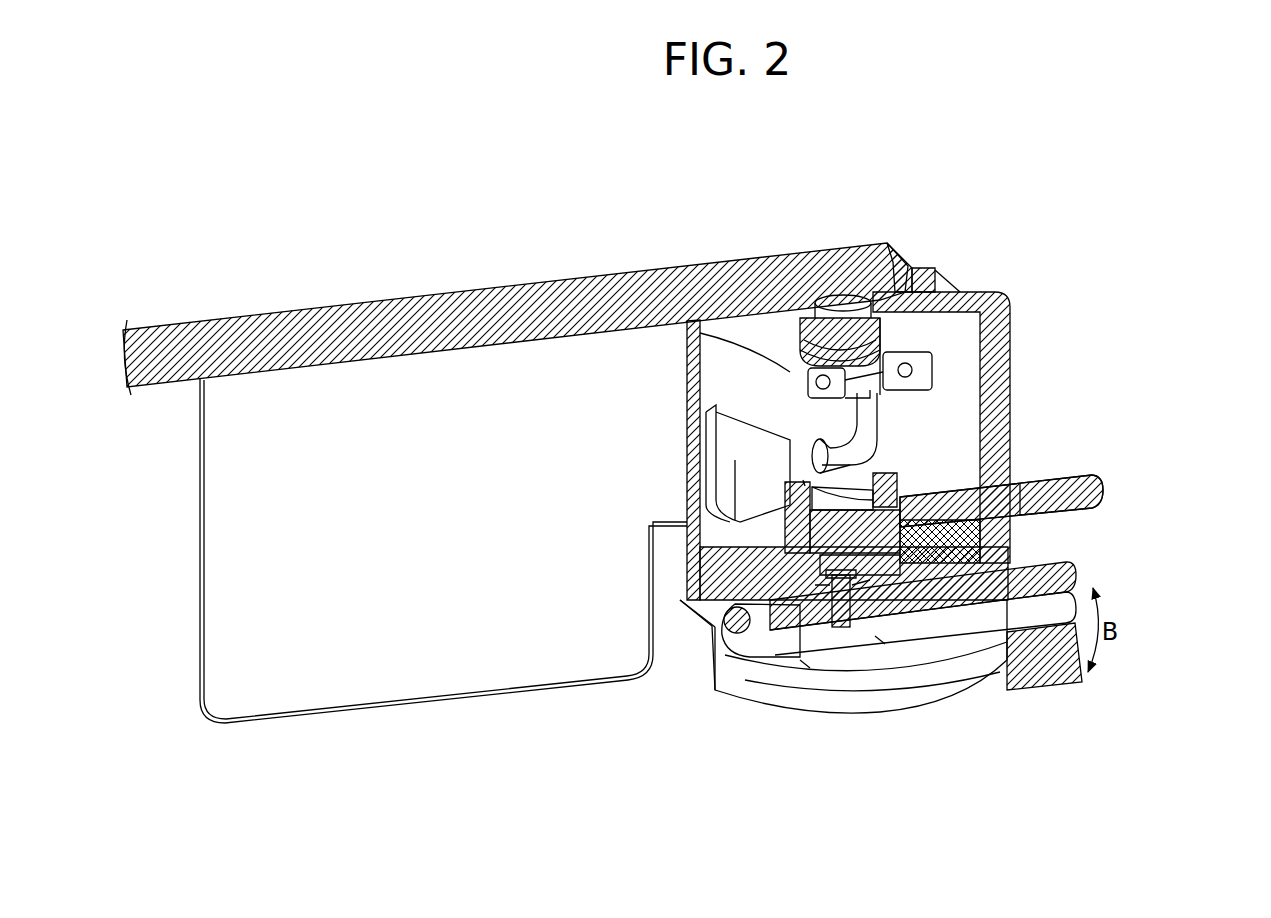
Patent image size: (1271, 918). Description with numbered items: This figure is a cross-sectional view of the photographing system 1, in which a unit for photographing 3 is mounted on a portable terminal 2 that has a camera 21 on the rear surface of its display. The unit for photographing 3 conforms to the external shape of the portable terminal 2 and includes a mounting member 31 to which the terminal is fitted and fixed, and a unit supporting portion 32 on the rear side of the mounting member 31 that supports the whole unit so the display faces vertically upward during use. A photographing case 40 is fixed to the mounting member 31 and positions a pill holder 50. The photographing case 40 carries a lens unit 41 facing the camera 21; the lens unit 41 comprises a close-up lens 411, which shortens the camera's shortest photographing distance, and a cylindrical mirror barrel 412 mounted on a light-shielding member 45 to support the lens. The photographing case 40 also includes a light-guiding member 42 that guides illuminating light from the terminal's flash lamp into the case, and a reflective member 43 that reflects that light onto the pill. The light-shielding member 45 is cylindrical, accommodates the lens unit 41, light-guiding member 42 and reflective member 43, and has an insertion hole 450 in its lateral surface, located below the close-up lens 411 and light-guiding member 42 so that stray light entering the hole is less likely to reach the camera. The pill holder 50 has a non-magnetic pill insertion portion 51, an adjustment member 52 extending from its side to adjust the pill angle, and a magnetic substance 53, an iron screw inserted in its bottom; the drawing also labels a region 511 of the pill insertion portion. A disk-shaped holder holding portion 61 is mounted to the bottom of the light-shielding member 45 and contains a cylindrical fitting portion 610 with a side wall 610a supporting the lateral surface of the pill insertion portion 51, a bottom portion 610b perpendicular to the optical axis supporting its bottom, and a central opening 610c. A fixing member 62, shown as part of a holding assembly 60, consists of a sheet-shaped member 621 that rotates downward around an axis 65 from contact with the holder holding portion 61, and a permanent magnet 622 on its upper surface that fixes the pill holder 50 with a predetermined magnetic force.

The photographing system 1 is at (1145, 196).
The portable terminal 2 is at (515, 284).
The unit for photographing 3 is at (913, 431).
The camera 21 is at (830, 296).
The mounting member 31 is at (481, 325).
The unit supporting portion 32 is at (247, 705).
The photographing case 40 is at (913, 431).
The lens unit 41 is at (948, 208).
The close-up lens 411 is at (893, 262).
The mirror barrel 412 is at (935, 270).
The light-guiding member 42 is at (920, 355).
The reflective member 43 is at (700, 650).
The light-shielding member 45 is at (1008, 290).
The insertion hole 450 is at (1022, 462).
The pill holder 50 is at (990, 476).
The pill insertion portion 51 is at (907, 472).
The support recess 511 is at (857, 474).
The adjustment member 52 is at (1104, 484).
The magnetic substance 53 is at (925, 520).
The hinge assembly 60 is at (941, 485).
The holder holding portion 61 is at (788, 682).
The fixing member 62 is at (1084, 577).
The axis 65 is at (738, 640).
The fitting portion 610 is at (925, 650).
The side wall 610a is at (805, 485).
The bottom portion 610b is at (880, 640).
The opening 610c is at (805, 665).
The sheet-shaped member 621 is at (1040, 658).
The magnet 622 is at (846, 635).